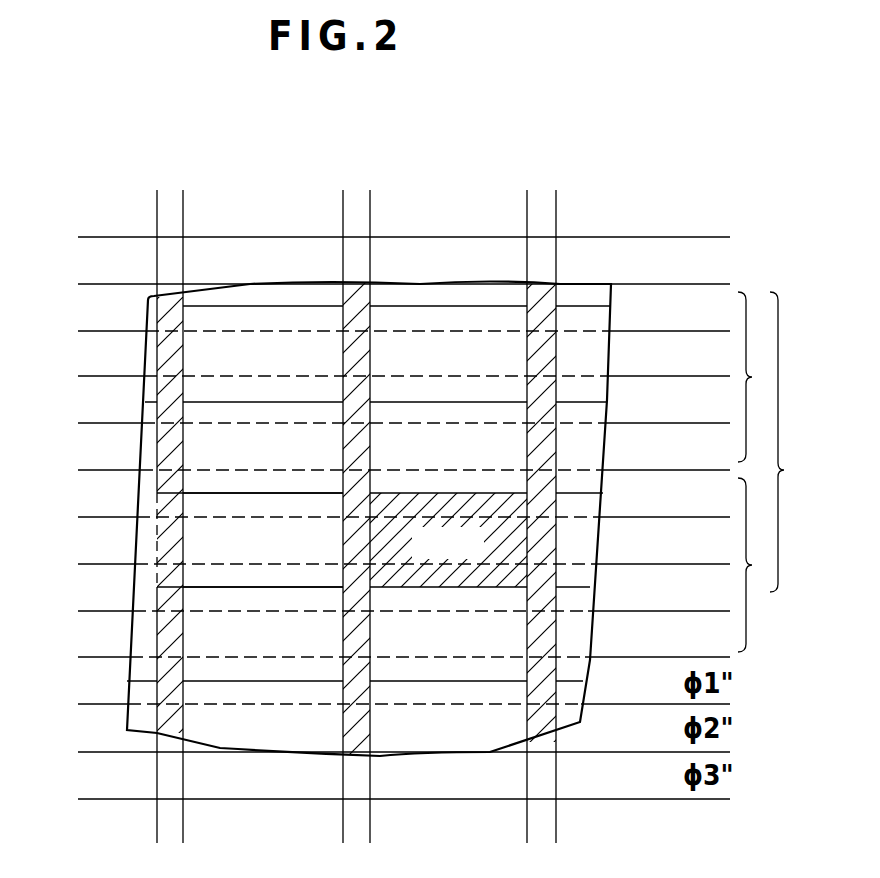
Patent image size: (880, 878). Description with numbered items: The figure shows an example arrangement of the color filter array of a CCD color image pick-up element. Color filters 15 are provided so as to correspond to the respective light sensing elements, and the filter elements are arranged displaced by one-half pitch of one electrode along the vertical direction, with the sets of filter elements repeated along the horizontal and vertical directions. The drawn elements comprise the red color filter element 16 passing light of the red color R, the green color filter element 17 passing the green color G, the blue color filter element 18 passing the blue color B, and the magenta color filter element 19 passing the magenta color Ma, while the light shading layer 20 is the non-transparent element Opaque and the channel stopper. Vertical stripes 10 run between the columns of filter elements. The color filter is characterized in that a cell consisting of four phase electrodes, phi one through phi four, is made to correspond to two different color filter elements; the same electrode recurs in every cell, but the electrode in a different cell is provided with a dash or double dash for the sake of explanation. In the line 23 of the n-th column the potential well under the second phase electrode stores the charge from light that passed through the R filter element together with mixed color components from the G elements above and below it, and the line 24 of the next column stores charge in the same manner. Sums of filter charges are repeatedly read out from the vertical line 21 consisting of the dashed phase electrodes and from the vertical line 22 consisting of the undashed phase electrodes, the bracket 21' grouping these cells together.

The vertical signal lines / opaque stripes 10 is at (358, 202).
The color filter 15 is at (248, 284).
The red color filter element 16 is at (243, 355).
The green color filter element 17 is at (243, 446).
The blue color filter element 18 is at (247, 540).
The magenta color filter element 19 is at (512, 358).
The light shading layer 20 is at (477, 588).
The vertical line 21 is at (728, 565).
The transfer clock group 21' is at (791, 442).
The vertical line 22 is at (728, 378).
The line in the n-th column 23 is at (267, 210).
The line in the n+1 column 24 is at (431, 207).